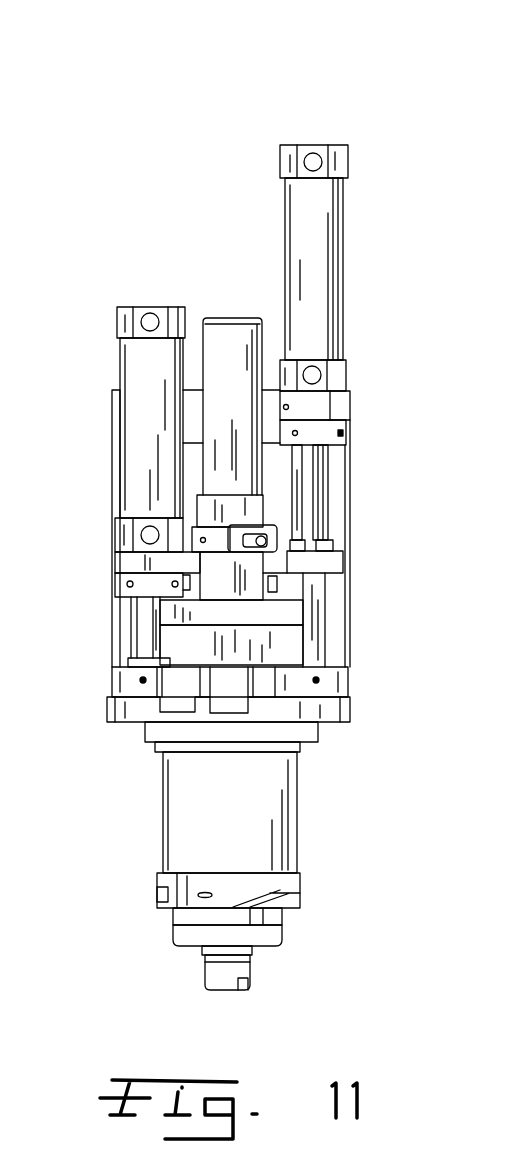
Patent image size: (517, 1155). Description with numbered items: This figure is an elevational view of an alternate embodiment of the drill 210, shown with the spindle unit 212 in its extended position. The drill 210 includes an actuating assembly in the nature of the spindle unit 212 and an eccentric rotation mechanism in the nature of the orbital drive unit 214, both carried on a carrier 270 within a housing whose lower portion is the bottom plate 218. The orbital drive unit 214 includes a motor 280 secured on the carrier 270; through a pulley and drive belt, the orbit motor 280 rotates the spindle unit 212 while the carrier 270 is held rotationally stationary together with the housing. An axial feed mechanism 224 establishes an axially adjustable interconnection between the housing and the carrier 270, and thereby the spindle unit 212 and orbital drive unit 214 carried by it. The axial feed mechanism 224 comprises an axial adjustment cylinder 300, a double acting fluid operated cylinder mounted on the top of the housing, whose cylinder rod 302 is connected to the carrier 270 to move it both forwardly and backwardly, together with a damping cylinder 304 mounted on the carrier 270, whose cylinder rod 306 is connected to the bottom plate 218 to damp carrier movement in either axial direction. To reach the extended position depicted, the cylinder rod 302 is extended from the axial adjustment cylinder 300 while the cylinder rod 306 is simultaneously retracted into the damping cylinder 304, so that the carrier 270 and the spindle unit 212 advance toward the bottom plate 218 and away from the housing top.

The drill 210 is at (258, 115).
The axial feed mechanism 224 is at (267, 173).
The axial adjustment cylinder 300 is at (330, 228).
The motor 280 is at (242, 363).
The cylinder rod 302 is at (312, 478).
The carrier 270 is at (333, 563).
The orbital drive unit 214 is at (233, 312).
The damping cylinder 304 is at (143, 373).
The cylinder rod 306 is at (147, 623).
The bottom plate 218 is at (330, 685).
The spindle unit 212 is at (150, 835).